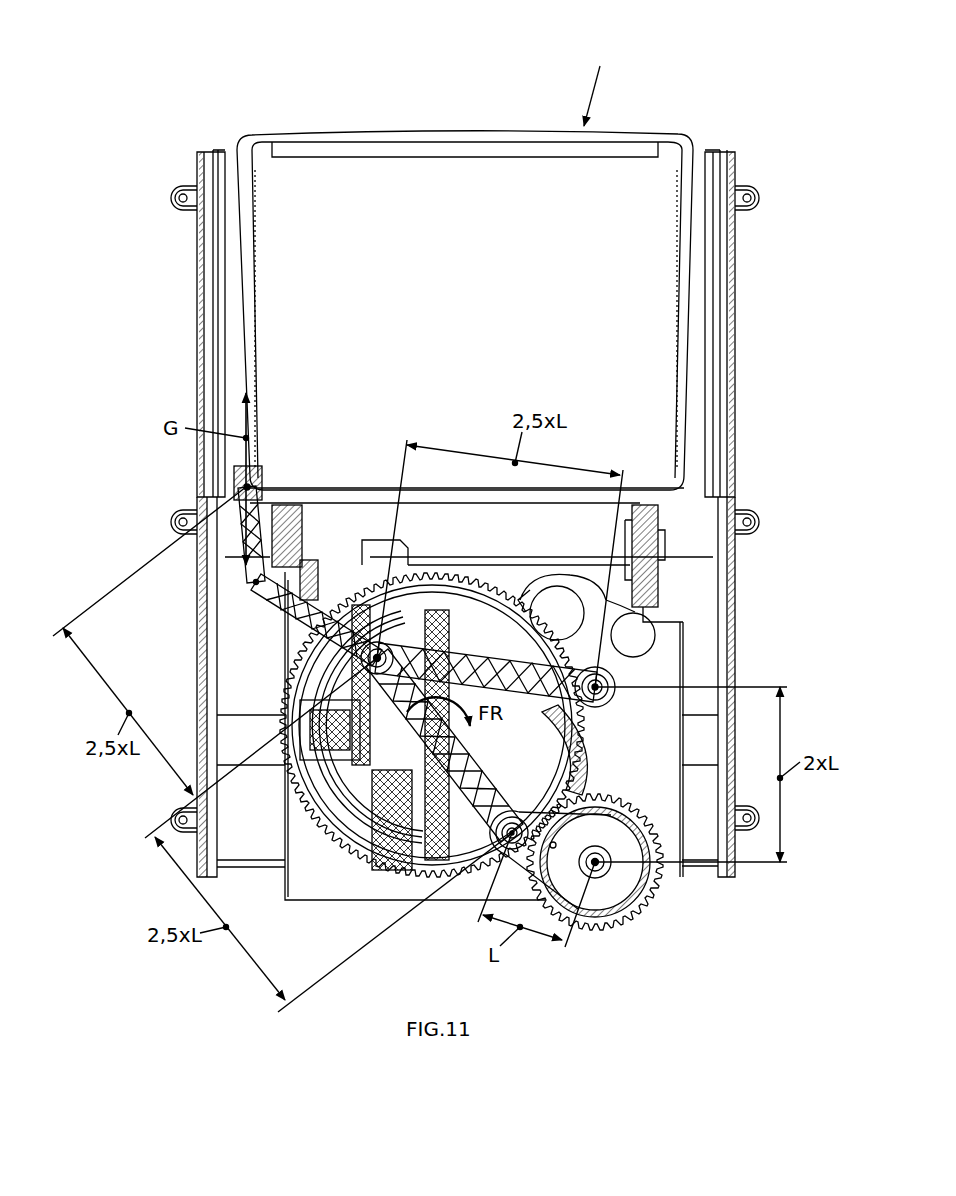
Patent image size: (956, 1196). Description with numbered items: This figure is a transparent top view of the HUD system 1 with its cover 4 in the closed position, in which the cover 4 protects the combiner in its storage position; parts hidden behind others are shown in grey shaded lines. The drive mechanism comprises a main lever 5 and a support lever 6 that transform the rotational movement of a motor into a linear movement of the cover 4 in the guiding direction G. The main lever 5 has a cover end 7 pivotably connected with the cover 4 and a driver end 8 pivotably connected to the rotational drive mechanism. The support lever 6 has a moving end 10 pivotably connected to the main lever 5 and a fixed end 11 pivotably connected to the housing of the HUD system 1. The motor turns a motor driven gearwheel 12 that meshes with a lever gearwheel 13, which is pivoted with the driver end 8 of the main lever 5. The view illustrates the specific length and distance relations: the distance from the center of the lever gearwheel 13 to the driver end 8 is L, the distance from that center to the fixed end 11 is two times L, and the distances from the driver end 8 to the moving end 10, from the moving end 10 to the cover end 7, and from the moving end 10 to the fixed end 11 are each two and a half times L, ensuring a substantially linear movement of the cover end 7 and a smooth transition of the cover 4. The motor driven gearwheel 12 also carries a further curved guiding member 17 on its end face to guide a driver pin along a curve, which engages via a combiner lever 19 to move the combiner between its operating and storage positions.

The HUD system 1 is at (190, 98).
The cover 4 is at (362, 168).
The main lever 5 is at (256, 582).
The support lever 6 is at (467, 672).
The cover end 7 is at (247, 487).
The driver end 8 is at (513, 826).
The moving end 10 is at (362, 666).
The fixed end 11 is at (609, 702).
The motor driven gearwheel 12 is at (443, 845).
The lever gearwheel 13 is at (645, 898).
The further curved guiding member 17 is at (325, 723).
The combiner lever 19 is at (370, 548).